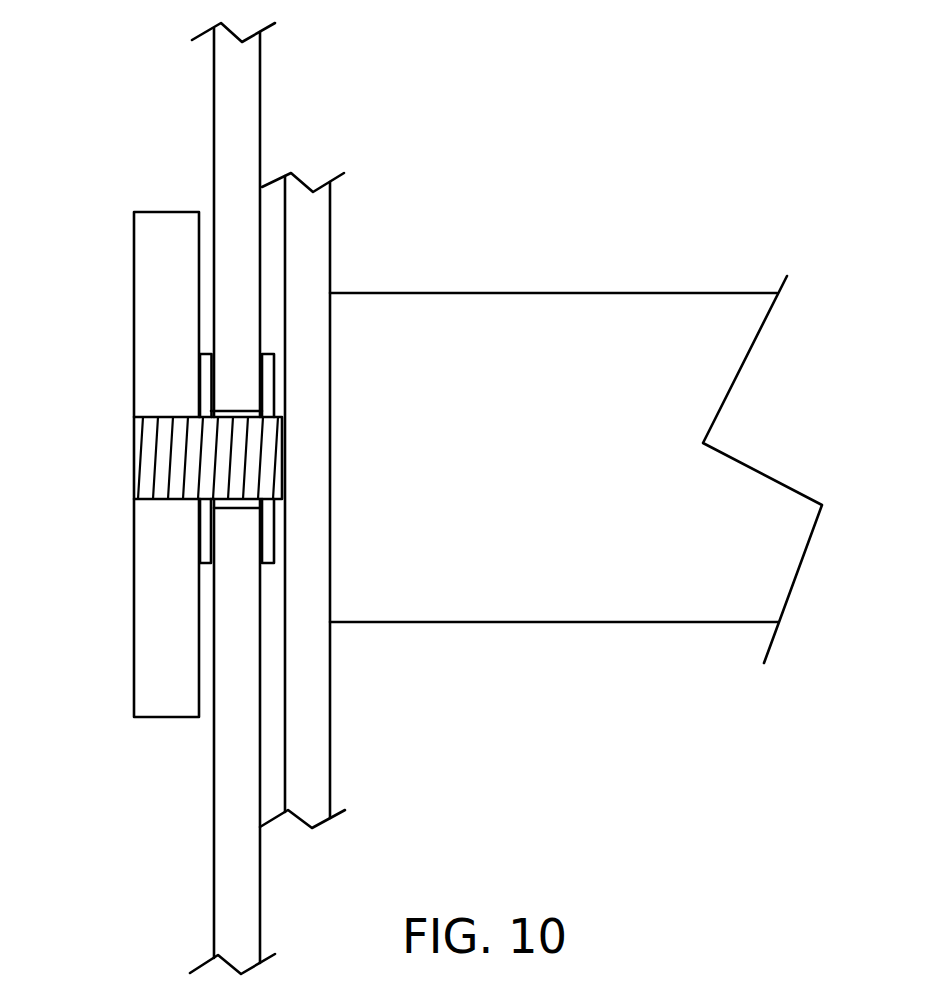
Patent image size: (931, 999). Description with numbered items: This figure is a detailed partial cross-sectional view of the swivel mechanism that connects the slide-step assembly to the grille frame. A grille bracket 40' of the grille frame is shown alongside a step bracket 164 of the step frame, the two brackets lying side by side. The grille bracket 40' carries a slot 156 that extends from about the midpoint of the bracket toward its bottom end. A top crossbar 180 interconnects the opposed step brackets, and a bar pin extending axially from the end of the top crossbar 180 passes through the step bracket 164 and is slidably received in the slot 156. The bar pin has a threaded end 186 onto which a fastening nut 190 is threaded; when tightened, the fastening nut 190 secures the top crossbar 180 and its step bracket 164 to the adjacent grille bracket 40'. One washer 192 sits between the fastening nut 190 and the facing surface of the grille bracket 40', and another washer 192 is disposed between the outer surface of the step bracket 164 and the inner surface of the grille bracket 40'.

The grille bracket 40' is at (177, 498).
The step bracket 164 is at (342, 220).
The slot 156 is at (238, 413).
The top crossbar 180 is at (545, 307).
The threaded end 186 is at (148, 472).
The fastening nut 190 is at (178, 313).
The washer 192 is at (206, 567).